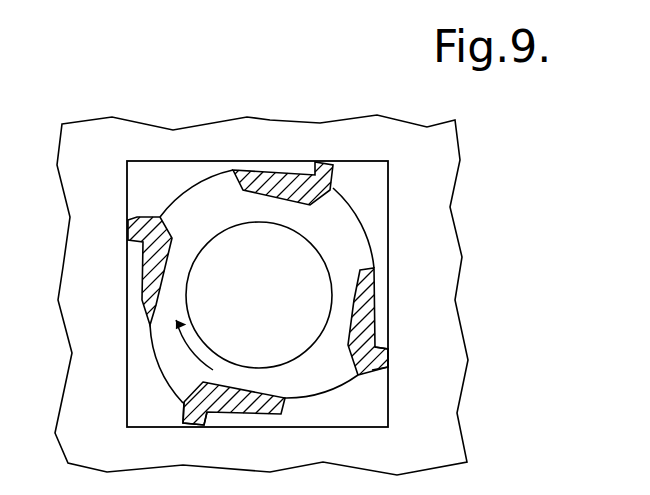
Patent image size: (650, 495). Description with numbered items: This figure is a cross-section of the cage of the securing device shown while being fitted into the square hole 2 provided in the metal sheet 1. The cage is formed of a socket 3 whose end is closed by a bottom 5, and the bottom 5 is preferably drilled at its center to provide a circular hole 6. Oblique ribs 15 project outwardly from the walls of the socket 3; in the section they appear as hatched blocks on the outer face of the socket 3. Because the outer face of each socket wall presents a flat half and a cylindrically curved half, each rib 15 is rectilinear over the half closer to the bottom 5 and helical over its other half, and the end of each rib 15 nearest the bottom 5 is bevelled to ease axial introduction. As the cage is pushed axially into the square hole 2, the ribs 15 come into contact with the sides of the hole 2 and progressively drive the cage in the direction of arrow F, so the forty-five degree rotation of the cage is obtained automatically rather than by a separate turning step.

The metal sheet 1 is at (430, 183).
The square hole 2 is at (270, 251).
The socket 3 is at (368, 300).
The bottom 5 is at (328, 230).
The circular hole 6 is at (331, 303).
The oblique ribs 15 is at (388, 360).
The arrow F is at (186, 336).